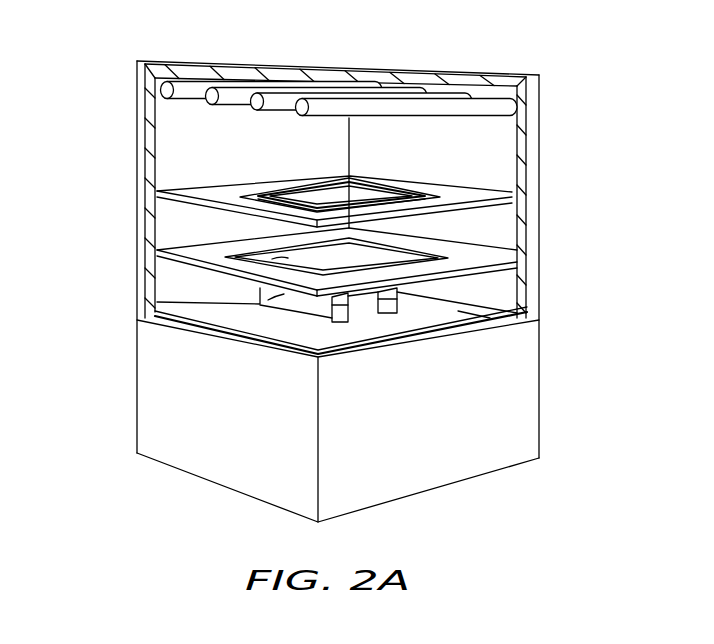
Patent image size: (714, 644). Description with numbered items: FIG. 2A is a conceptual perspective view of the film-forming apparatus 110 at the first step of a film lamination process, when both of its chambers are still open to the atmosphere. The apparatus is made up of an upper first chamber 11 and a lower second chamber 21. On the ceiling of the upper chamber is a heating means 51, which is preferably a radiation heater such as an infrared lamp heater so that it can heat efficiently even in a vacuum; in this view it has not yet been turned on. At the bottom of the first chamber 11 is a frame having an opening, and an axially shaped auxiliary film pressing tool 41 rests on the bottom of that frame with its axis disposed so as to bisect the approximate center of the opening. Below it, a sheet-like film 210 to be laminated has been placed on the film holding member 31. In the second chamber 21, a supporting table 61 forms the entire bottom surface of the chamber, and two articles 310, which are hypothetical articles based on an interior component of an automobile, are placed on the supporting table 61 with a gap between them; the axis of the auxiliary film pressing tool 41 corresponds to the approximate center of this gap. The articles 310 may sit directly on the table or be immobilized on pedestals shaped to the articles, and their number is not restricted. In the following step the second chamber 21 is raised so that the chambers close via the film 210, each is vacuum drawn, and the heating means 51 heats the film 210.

The first chamber 11 is at (492, 140).
The film-forming apparatus 110 is at (200, 46).
The heating means 51 is at (412, 105).
The auxiliary film pressing tool 41 is at (157, 197).
The film 210 is at (157, 245).
The film holding member 31 is at (478, 256).
The second chamber 21 is at (495, 289).
The supporting table 61 is at (517, 320).
The articles 310 is at (157, 320).